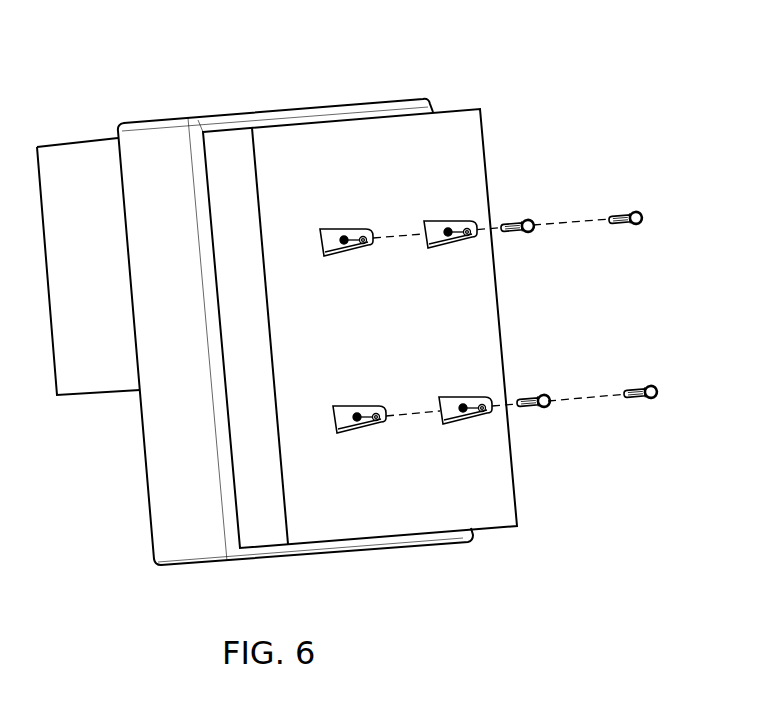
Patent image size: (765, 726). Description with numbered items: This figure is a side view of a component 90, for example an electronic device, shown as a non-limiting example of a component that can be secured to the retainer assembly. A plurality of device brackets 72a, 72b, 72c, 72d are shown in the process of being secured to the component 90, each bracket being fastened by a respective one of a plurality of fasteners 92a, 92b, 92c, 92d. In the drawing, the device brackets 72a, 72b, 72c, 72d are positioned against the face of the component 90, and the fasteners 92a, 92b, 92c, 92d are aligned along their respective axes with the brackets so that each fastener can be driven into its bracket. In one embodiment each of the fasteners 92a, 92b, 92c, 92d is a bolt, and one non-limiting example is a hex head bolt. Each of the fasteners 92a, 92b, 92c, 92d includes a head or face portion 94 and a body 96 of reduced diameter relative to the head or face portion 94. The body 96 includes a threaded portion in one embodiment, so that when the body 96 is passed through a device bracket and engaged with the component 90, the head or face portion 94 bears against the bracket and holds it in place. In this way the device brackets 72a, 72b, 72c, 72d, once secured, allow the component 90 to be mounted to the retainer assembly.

The component 90 is at (412, 57).
The device bracket 72a is at (358, 441).
The device bracket 72b is at (340, 262).
The device bracket 72c is at (448, 258).
The device bracket 72d is at (468, 431).
The fastener 92a is at (550, 388).
The fastener 92b is at (516, 217).
The fastener 92c is at (625, 209).
The fastener 92d is at (637, 382).
The head or face portion 94 is at (541, 410).
The body 96 is at (522, 410).